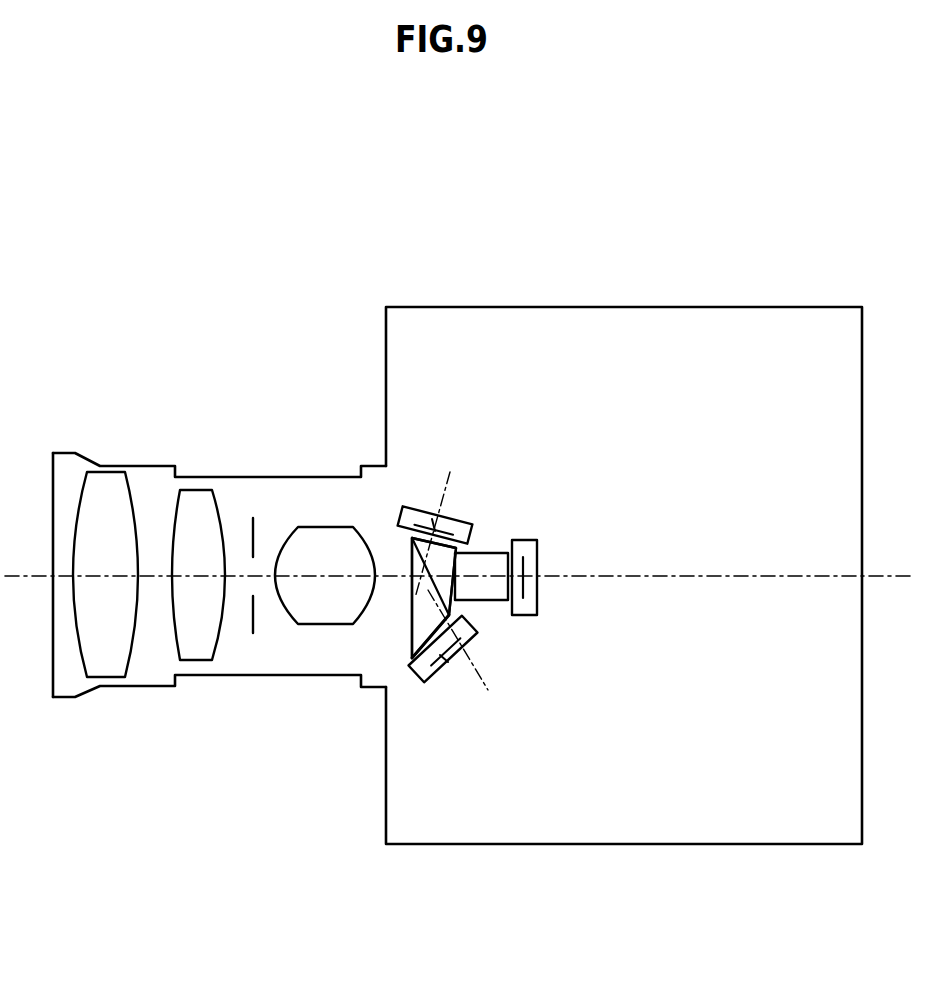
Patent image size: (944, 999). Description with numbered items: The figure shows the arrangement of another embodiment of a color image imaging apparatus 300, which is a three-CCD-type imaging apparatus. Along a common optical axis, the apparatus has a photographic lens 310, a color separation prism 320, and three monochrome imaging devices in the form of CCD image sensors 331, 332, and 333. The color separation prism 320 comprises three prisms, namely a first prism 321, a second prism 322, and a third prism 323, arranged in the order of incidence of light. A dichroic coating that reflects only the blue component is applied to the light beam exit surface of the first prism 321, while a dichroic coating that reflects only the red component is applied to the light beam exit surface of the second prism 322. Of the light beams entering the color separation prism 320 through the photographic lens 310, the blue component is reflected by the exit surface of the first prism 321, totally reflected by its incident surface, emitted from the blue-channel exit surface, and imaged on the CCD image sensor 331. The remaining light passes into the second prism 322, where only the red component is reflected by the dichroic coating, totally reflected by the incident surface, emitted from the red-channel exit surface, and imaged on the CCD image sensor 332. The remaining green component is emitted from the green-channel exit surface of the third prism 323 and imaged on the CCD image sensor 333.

The color image imaging apparatus 300 is at (570, 265).
The photographic lens 310 is at (213, 477).
The color separation prism 320 is at (405, 610).
The first prism 321 is at (415, 634).
The second prism 322 is at (453, 543).
The third prism 323 is at (494, 553).
The CCD image sensor 331 is at (434, 673).
The CCD image sensor 332 is at (411, 505).
The CCD image sensor 333 is at (538, 541).